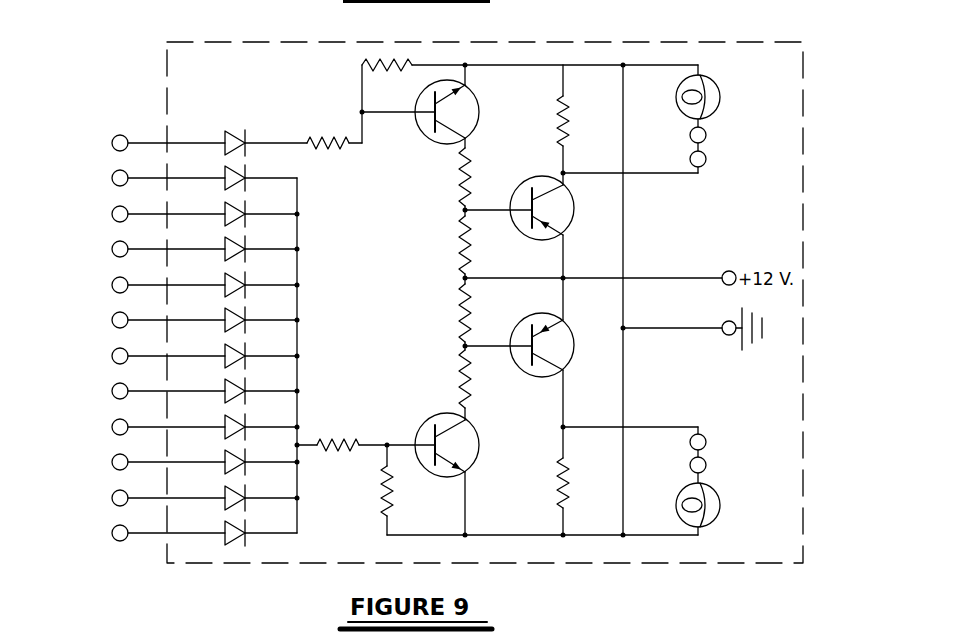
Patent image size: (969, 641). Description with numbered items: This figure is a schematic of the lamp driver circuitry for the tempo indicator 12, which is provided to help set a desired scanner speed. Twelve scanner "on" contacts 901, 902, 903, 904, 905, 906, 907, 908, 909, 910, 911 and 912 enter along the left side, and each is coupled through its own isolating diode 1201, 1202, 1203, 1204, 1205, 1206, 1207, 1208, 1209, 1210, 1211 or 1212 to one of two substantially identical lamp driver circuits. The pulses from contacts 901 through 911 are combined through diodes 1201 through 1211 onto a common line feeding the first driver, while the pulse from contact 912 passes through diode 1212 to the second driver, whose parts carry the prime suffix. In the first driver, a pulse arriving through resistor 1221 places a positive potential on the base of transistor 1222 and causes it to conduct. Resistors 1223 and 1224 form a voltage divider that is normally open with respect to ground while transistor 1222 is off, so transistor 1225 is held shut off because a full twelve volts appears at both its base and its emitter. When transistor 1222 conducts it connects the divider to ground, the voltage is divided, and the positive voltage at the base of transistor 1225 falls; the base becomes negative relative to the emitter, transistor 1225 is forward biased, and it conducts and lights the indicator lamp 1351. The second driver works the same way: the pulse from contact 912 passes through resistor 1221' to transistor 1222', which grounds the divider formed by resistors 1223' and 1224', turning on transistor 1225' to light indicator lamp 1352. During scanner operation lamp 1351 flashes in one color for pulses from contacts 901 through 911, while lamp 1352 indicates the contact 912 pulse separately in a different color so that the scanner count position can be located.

The tempo indicator 12 is at (609, 42).
The scanner on contact 901 is at (112, 533).
The scanner on contact 902 is at (112, 498).
The scanner on contact 903 is at (112, 462).
The scanner on contact 904 is at (112, 427).
The scanner on contact 905 is at (112, 391).
The scanner on contact 906 is at (112, 356).
The scanner on contact 907 is at (112, 320).
The scanner on contact 908 is at (112, 285).
The scanner on contact 909 is at (112, 249).
The scanner on contact 910 is at (112, 214).
The scanner on contact 911 is at (112, 178).
The scanner on contact 912 is at (112, 143).
The isolating diode 1201 is at (234, 526).
The isolating diode 1202 is at (234, 491).
The isolating diode 1203 is at (234, 455).
The isolating diode 1204 is at (234, 420).
The isolating diode 1205 is at (234, 384).
The isolating diode 1206 is at (234, 349).
The isolating diode 1207 is at (234, 313).
The isolating diode 1208 is at (234, 278).
The isolating diode 1209 is at (234, 242).
The isolating diode 1210 is at (234, 207).
The isolating diode 1211 is at (234, 171).
The isolating diode 1212 is at (235, 130).
The resistor 1221 is at (346, 422).
The resistor 1221' is at (350, 174).
The transistor 1222 is at (474, 474).
The transistor 1222' is at (479, 106).
The resistor 1223 is at (426, 313).
The resistor 1223' is at (429, 245).
The resistor 1224 is at (426, 379).
The resistor 1224' is at (429, 177).
The transistor 1225 is at (591, 352).
The transistor 1225' is at (596, 225).
The indicator lamp 1351 is at (720, 496).
The indicator lamp 1352 is at (720, 100).